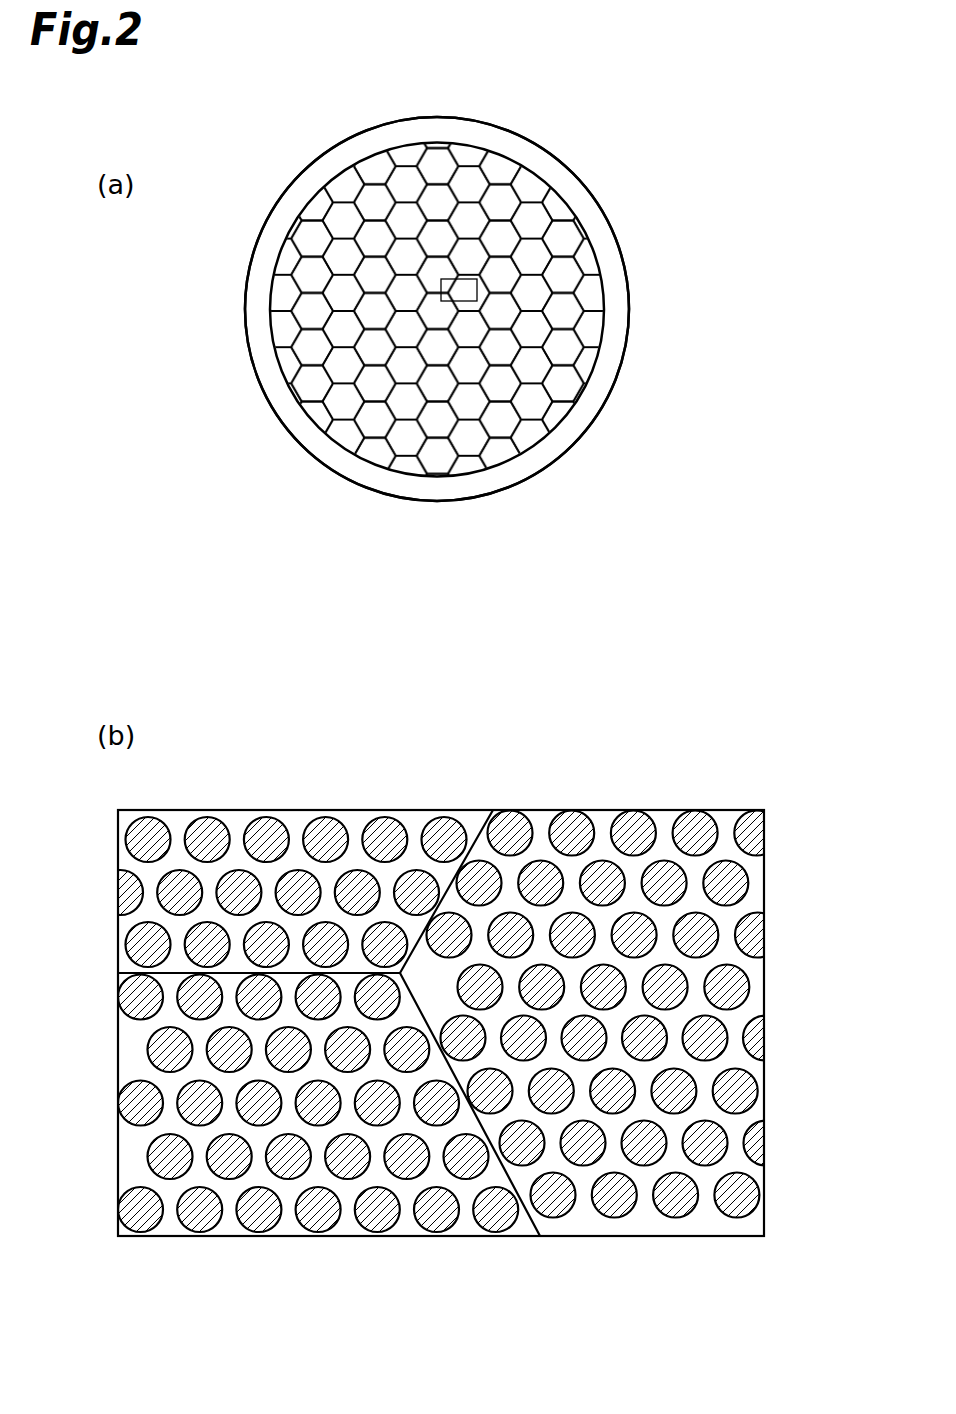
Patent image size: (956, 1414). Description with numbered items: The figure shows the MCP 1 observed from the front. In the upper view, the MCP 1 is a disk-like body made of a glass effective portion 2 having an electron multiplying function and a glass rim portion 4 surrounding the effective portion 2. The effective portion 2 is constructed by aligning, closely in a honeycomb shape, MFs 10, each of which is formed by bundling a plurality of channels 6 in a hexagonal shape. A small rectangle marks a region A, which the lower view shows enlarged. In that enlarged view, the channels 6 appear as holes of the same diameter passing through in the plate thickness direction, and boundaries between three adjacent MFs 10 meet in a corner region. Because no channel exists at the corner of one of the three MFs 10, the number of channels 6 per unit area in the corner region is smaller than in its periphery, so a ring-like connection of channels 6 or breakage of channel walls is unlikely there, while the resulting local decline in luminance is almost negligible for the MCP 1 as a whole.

The MCP 1 is at (598, 145).
The effective portion 2 is at (602, 357).
The rim portion 4 is at (623, 283).
The MF 10 is at (572, 310).
The channel 6 is at (735, 985).
The region A is at (478, 289).